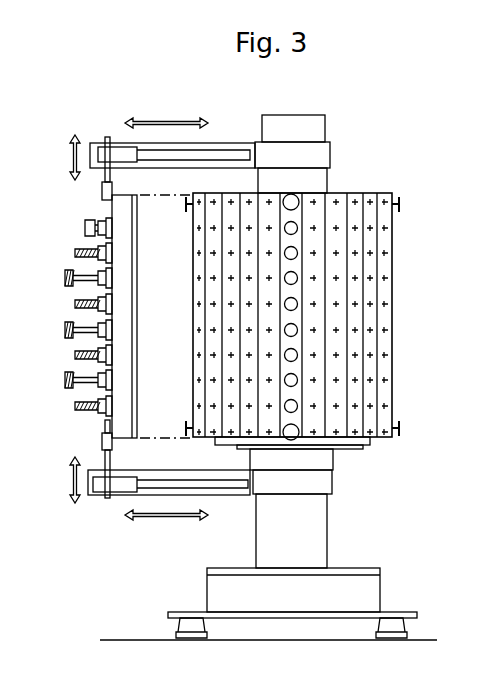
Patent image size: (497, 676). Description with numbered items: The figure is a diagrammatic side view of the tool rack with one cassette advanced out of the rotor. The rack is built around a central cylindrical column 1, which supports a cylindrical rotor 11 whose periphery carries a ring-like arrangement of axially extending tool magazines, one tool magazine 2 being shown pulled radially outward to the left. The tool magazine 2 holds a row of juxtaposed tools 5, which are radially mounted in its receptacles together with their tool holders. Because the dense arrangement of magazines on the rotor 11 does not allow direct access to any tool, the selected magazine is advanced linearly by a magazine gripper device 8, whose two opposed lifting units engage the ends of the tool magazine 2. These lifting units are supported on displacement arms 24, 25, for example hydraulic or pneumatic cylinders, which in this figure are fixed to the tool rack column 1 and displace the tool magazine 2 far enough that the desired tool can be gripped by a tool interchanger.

The central cylindrical column 1 is at (315, 530).
The tool magazine 2 is at (118, 316).
The tool 5 is at (90, 277).
The magazine gripper device 8 is at (100, 192).
The cylindrical rotor 11 is at (399, 189).
The displacement arm 24 is at (218, 145).
The displacement arm 25 is at (132, 494).